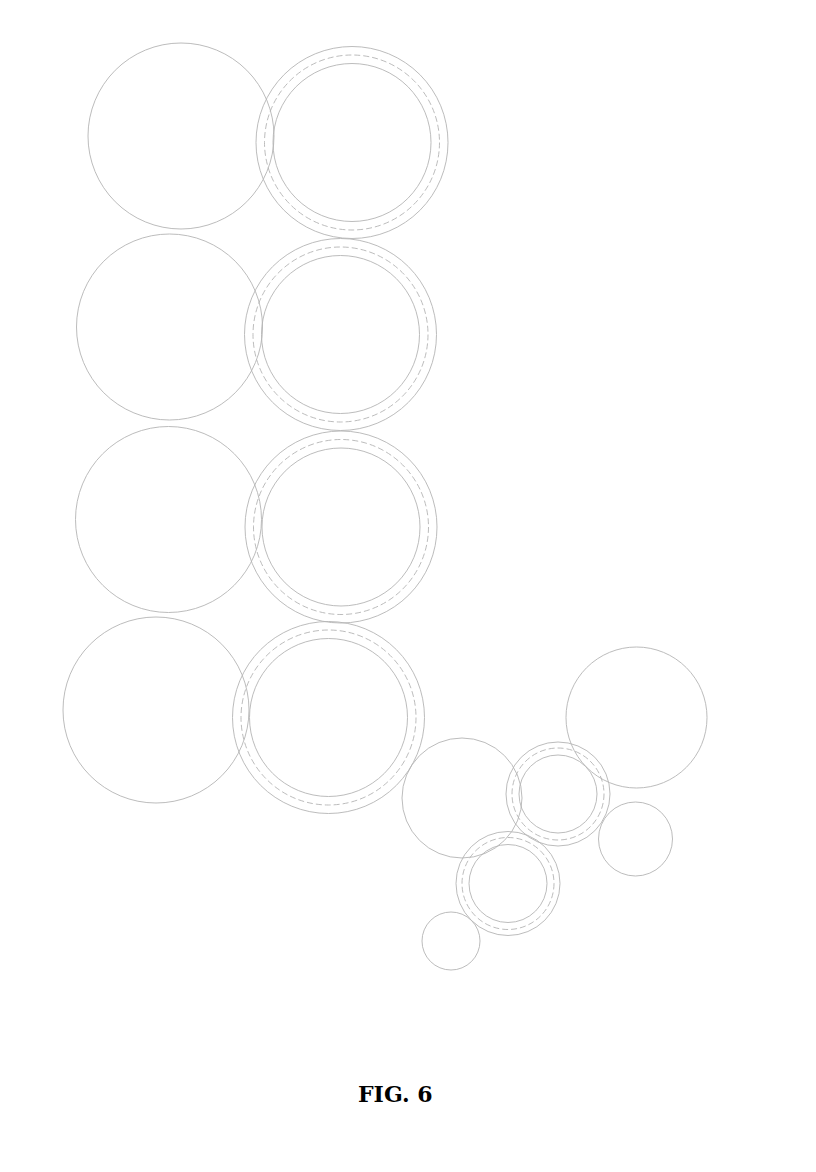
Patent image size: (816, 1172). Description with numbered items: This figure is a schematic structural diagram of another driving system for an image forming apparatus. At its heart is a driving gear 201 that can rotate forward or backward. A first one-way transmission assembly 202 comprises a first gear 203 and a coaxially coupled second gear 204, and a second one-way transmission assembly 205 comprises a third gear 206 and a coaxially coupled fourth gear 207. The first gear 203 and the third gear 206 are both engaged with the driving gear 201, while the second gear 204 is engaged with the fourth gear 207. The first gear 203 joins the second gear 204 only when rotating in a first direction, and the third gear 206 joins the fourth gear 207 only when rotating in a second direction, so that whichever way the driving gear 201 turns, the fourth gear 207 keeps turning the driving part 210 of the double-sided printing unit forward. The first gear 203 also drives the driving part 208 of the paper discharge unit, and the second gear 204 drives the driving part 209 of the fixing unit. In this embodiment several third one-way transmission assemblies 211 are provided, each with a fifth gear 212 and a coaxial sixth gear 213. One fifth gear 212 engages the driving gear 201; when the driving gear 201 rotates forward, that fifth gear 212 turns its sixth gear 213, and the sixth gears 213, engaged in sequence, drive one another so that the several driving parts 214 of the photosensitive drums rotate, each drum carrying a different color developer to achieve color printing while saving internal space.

The driving gear 201 is at (415, 838).
The first one-way transmission assembly 202 is at (538, 750).
The first gear 203 is at (533, 777).
The second gear 204 is at (552, 740).
The second one-way transmission assembly 205 is at (497, 927).
The third gear 206 is at (510, 917).
The fourth gear 207 is at (485, 930).
The driving part of the paper discharge unit 208 is at (693, 759).
The driving part of the fixing unit 209 is at (622, 876).
The driving part of the double-sided printing unit 210 is at (432, 920).
The third one-way transmission assembly 211 is at (413, 193).
The fifth gear 212 is at (248, 769).
The sixth gear 213 is at (295, 780).
The driving part of the photosensitive drum 214 is at (98, 180).